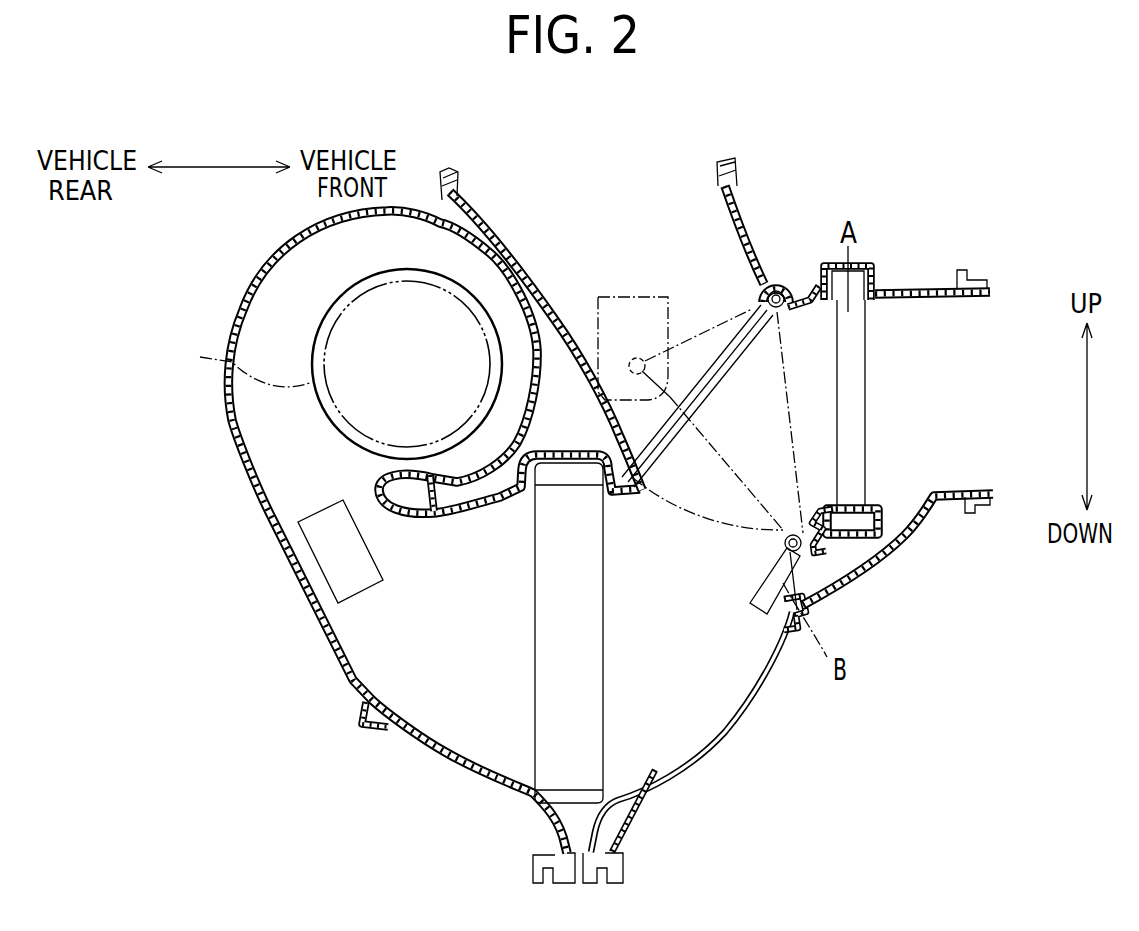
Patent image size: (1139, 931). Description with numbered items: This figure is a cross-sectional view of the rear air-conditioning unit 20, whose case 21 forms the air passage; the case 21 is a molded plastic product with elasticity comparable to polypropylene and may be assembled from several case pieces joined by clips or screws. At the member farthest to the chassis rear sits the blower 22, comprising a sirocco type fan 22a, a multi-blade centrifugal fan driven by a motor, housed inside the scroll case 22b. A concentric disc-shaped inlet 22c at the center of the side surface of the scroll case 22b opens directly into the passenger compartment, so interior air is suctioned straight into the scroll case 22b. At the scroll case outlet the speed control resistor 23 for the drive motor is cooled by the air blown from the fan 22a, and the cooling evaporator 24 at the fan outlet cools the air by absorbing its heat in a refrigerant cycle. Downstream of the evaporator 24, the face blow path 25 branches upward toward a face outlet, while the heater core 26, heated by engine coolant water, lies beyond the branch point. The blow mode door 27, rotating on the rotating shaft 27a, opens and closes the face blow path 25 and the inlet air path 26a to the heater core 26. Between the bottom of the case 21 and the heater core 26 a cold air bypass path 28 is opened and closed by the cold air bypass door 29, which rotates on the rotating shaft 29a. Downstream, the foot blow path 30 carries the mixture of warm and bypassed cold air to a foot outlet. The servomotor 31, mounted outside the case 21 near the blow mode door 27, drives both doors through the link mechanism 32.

The rear air-conditioning unit 20 is at (630, 525).
The case 21 is at (745, 712).
The blower 22 is at (256, 250).
The sirocco type fan 22a is at (380, 343).
The scroll case 22b is at (240, 335).
The inlet 22c is at (200, 357).
The speed control resistor 23 is at (333, 557).
The cooling evaporator 24 is at (550, 712).
The face blow path 25 is at (675, 230).
The heater core 26 is at (864, 263).
The inlet air path 26a is at (822, 412).
The blow mode door 27 is at (745, 290).
The rotating shaft 27a is at (760, 283).
The cold air bypass path 28 is at (860, 553).
The cold air bypass door 29 is at (803, 613).
The rotating shaft 29a is at (837, 580).
The foot blow path 30 is at (970, 384).
The servomotor 31 is at (610, 297).
The link mechanism 32 is at (698, 330).